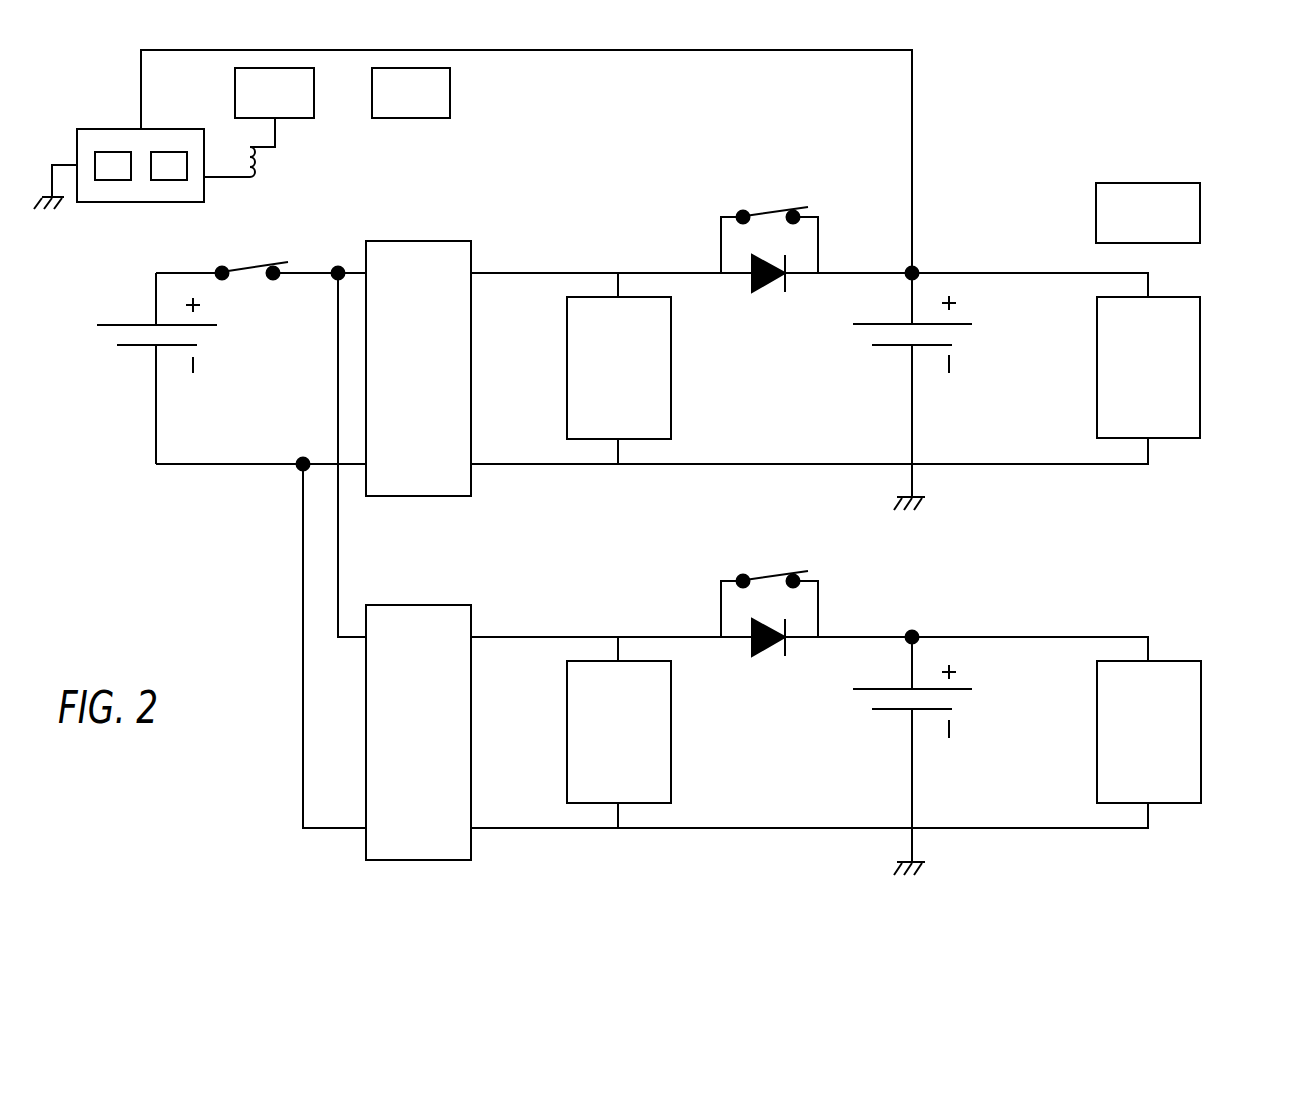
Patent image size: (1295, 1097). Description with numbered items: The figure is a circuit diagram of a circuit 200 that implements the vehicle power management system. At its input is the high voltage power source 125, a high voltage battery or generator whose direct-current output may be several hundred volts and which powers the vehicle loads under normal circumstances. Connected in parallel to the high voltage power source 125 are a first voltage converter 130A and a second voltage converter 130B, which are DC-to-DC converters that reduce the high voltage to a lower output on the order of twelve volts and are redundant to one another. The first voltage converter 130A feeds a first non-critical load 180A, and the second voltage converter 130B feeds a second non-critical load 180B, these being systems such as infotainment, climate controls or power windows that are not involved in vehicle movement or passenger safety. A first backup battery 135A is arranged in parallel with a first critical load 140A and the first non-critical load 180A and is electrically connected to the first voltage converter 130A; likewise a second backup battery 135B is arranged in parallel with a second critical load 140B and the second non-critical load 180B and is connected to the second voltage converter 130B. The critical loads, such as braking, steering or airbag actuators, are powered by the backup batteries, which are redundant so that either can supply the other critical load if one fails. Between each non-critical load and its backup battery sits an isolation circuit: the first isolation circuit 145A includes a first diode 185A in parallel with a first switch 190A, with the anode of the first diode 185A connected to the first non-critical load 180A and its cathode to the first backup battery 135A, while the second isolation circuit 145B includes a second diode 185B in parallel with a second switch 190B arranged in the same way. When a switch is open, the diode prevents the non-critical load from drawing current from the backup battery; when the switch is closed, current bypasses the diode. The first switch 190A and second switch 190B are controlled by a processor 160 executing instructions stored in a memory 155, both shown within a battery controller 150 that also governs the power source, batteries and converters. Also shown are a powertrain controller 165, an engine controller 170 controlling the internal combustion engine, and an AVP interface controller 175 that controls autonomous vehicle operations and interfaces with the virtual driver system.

The circuit 200 is at (1294, 87).
The high voltage power source 125 is at (116, 364).
The first voltage converter 130A is at (451, 240).
The second voltage converter 130B is at (450, 605).
The first backup battery 135A is at (859, 345).
The second backup battery 135B is at (859, 709).
The first critical load 140A is at (1202, 313).
The second critical load 140B is at (1203, 675).
The first isolation circuit 145A is at (820, 210).
The second isolation circuit 145B is at (820, 574).
The battery controller 150 is at (98, 129).
The memory 155 is at (105, 181).
The processor 160 is at (162, 181).
The powertrain controller 165 is at (300, 118).
The engine controller 170 is at (438, 118).
The AVP interface controller 175 is at (1176, 183).
The first non-critical load 180A is at (672, 314).
The second non-critical load 180B is at (672, 678).
The first diode 185A is at (797, 283).
The second diode 185B is at (797, 647).
The first switch 190A is at (756, 199).
The second switch 190B is at (756, 563).